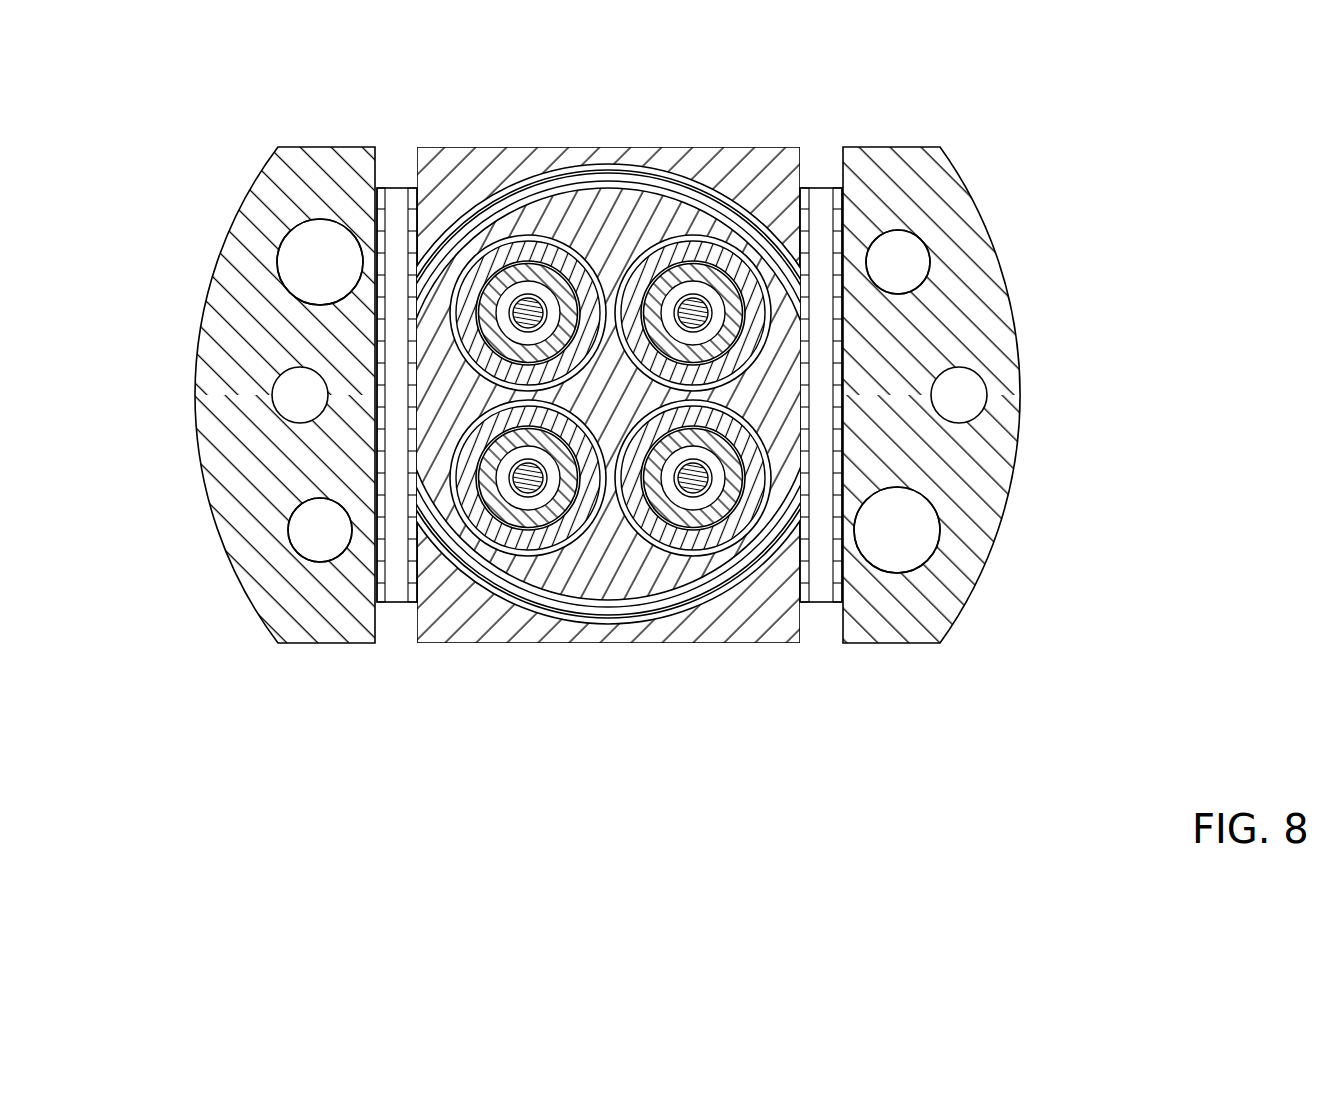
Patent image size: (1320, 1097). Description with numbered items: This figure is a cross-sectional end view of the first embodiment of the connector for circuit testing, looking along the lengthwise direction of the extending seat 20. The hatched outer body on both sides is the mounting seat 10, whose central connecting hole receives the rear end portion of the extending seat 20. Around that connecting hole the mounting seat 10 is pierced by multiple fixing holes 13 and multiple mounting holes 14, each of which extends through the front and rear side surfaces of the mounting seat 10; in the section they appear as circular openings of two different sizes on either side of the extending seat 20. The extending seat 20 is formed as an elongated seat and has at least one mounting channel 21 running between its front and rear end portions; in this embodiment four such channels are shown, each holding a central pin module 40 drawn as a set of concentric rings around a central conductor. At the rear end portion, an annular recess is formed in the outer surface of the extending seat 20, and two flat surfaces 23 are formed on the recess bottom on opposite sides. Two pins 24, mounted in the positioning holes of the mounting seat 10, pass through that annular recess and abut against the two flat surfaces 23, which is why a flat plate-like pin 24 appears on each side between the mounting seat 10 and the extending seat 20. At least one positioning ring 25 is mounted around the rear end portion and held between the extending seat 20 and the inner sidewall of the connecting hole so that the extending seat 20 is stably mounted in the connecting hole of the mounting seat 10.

The mounting seat 10 is at (968, 478).
The fixing holes 13 is at (928, 255).
The mounting holes 14 is at (280, 256).
The extending seat 20 is at (751, 176).
The mounting channel 21 is at (495, 256).
The flat surfaces 23 is at (420, 456).
The pins 24 is at (807, 572).
The positioning ring 25 is at (500, 577).
The central pin module 40 is at (668, 240).